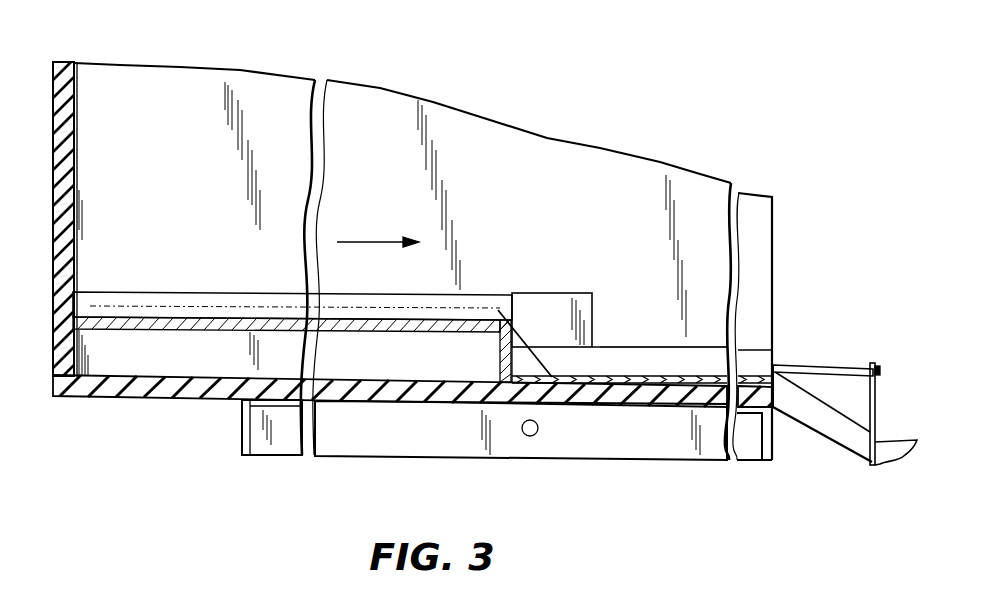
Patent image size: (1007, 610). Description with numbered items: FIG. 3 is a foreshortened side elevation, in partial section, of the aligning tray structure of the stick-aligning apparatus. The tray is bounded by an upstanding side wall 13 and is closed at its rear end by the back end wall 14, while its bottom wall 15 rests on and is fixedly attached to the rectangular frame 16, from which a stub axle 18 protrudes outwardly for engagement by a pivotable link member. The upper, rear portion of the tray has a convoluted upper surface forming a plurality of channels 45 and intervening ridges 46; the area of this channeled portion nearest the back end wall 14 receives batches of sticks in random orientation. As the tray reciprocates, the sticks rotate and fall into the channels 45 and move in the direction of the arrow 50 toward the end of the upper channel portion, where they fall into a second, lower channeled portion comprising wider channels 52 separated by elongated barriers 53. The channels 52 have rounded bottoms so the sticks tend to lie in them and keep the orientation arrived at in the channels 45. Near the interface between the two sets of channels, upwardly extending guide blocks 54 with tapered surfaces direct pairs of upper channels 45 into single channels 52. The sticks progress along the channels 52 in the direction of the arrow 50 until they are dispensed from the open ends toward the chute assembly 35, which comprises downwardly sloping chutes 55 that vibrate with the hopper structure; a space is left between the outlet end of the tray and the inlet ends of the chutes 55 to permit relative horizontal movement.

The side wall 13 is at (480, 116).
The back end wall 14 is at (53, 65).
The bottom wall 15 is at (163, 399).
The rectangular frame 16 is at (625, 458).
The stub axle 18 is at (537, 434).
The tapered chute assembly 35 is at (820, 354).
The channel 45 is at (130, 318).
The ridge 46 is at (199, 292).
The arrow 50 is at (357, 242).
The channel 52 is at (610, 377).
The elongated barrier 53 is at (705, 348).
The guide block 54 is at (548, 293).
The chute 55 is at (840, 447).